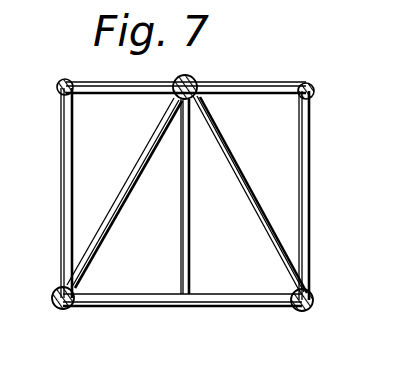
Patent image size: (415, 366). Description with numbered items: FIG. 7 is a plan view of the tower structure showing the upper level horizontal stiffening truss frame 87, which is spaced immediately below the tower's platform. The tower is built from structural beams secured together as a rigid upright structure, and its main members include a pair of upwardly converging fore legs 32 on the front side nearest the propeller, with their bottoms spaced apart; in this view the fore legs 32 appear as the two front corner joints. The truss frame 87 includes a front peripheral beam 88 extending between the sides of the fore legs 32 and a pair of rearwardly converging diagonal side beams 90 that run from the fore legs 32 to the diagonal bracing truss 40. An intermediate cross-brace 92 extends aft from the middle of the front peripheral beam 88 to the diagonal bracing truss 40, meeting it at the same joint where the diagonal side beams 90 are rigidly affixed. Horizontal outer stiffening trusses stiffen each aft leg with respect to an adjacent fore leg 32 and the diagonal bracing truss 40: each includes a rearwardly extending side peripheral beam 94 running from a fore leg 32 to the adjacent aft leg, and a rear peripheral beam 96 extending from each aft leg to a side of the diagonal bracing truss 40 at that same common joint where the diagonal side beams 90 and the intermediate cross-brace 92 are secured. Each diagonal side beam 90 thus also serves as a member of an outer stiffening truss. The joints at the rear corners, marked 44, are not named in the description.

The fore legs 32 is at (63, 309).
The diagonal bracing truss 40 is at (196, 77).
The top corner joint 44 is at (65, 79).
The upper level horizontal stiffening truss frame 87 is at (318, 151).
The front peripheral beam 88 is at (157, 300).
The diagonal side beams 90 is at (136, 168).
The intermediate cross-brace 92 is at (190, 246).
The side peripheral beam 94 is at (60, 174).
The rear peripheral beam 96 is at (110, 90).